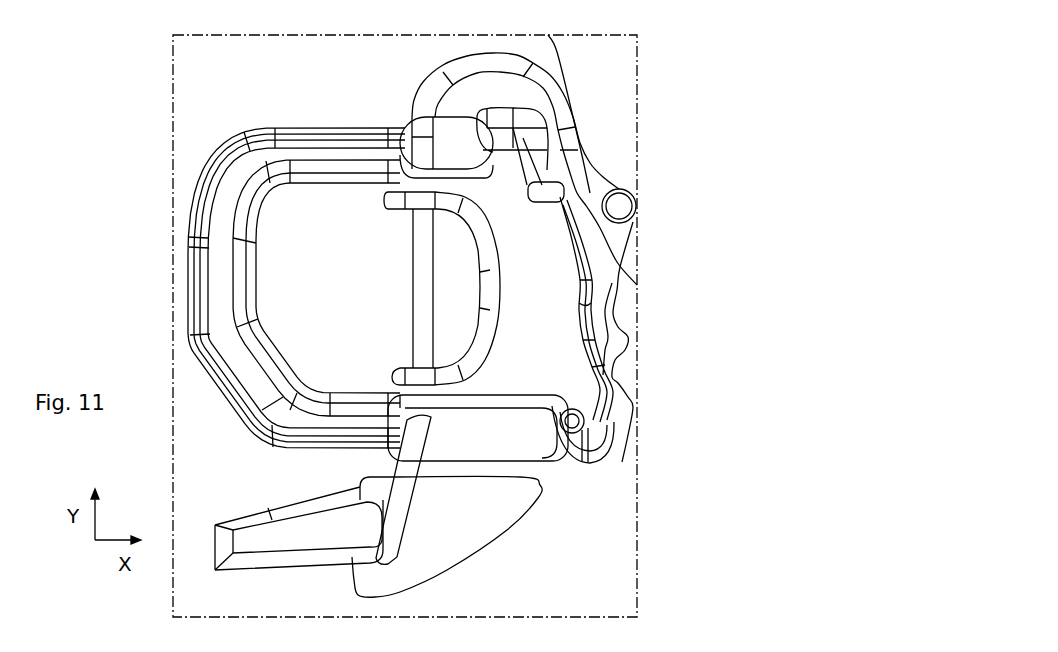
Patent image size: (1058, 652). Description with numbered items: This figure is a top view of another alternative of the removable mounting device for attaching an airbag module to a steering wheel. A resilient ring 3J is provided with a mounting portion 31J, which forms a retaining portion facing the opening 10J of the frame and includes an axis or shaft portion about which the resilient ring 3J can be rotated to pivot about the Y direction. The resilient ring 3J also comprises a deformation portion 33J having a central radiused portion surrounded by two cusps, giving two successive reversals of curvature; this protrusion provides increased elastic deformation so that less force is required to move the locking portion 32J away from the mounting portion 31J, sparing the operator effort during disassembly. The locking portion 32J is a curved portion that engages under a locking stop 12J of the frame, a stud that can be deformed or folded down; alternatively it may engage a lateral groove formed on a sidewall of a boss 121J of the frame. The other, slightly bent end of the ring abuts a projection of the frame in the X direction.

The opening 10J is at (362, 353).
The mounting portion 31J is at (417, 328).
The locking portion 32J is at (608, 258).
The deformation portion 33J is at (510, 62).
The locking stop 12J is at (621, 208).
The boss 121J is at (575, 348).
The resilient ring 3J is at (430, 530).